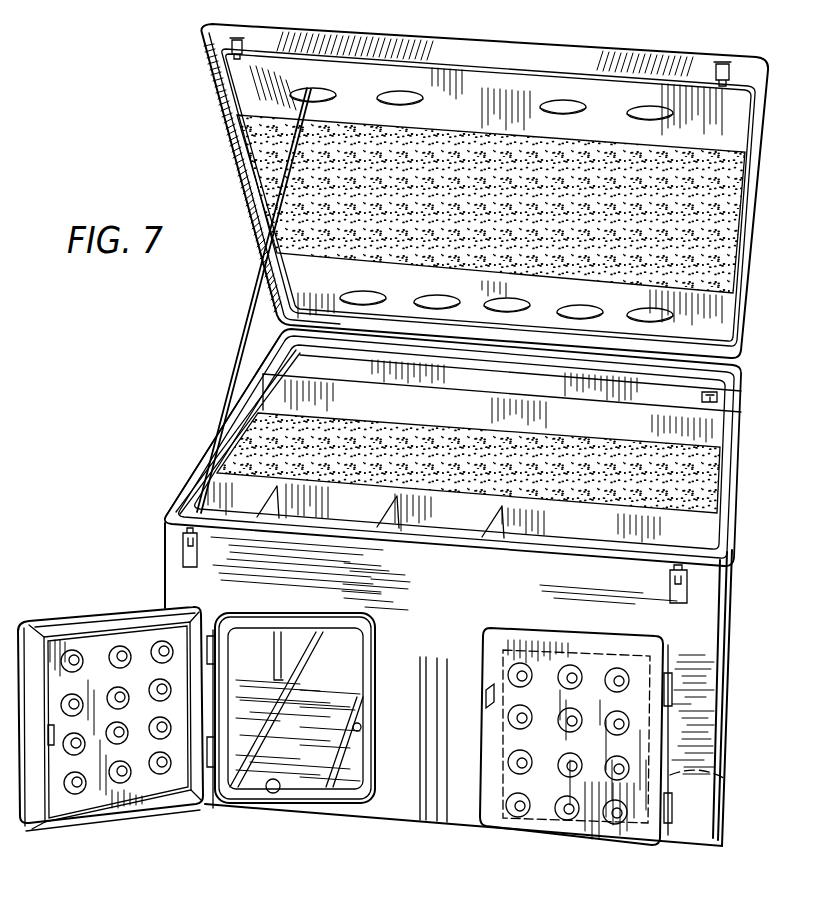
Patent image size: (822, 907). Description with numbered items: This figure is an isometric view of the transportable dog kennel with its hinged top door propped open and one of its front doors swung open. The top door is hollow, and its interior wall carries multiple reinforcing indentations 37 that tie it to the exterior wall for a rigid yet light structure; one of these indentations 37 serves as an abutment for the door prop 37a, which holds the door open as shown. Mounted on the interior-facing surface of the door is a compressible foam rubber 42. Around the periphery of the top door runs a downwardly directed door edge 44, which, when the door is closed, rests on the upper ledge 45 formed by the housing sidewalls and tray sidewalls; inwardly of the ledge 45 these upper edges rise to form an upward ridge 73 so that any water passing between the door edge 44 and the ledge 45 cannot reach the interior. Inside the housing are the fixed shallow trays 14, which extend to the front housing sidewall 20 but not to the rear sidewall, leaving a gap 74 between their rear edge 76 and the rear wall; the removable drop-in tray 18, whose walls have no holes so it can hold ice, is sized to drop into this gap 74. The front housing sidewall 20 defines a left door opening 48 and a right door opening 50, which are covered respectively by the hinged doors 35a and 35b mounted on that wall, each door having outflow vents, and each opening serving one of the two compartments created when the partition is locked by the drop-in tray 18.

The fixed shallow trays 14 is at (479, 463).
The removable drop-in tray 18 is at (738, 384).
The front housing sidewall 20 is at (440, 598).
The hinged door 35a is at (60, 623).
The hinged door 35b is at (594, 657).
The reinforcing indentations 37 is at (330, 96).
The door prop 37a is at (248, 300).
The foam rubber 42 is at (512, 216).
The door edge 44 is at (218, 137).
The upper ledge 45 is at (735, 490).
The left door opening 48 is at (277, 788).
The right door opening 50 is at (722, 782).
The upward ridge 73 is at (194, 474).
The gap 74 is at (722, 402).
The rear edge 76 is at (283, 357).